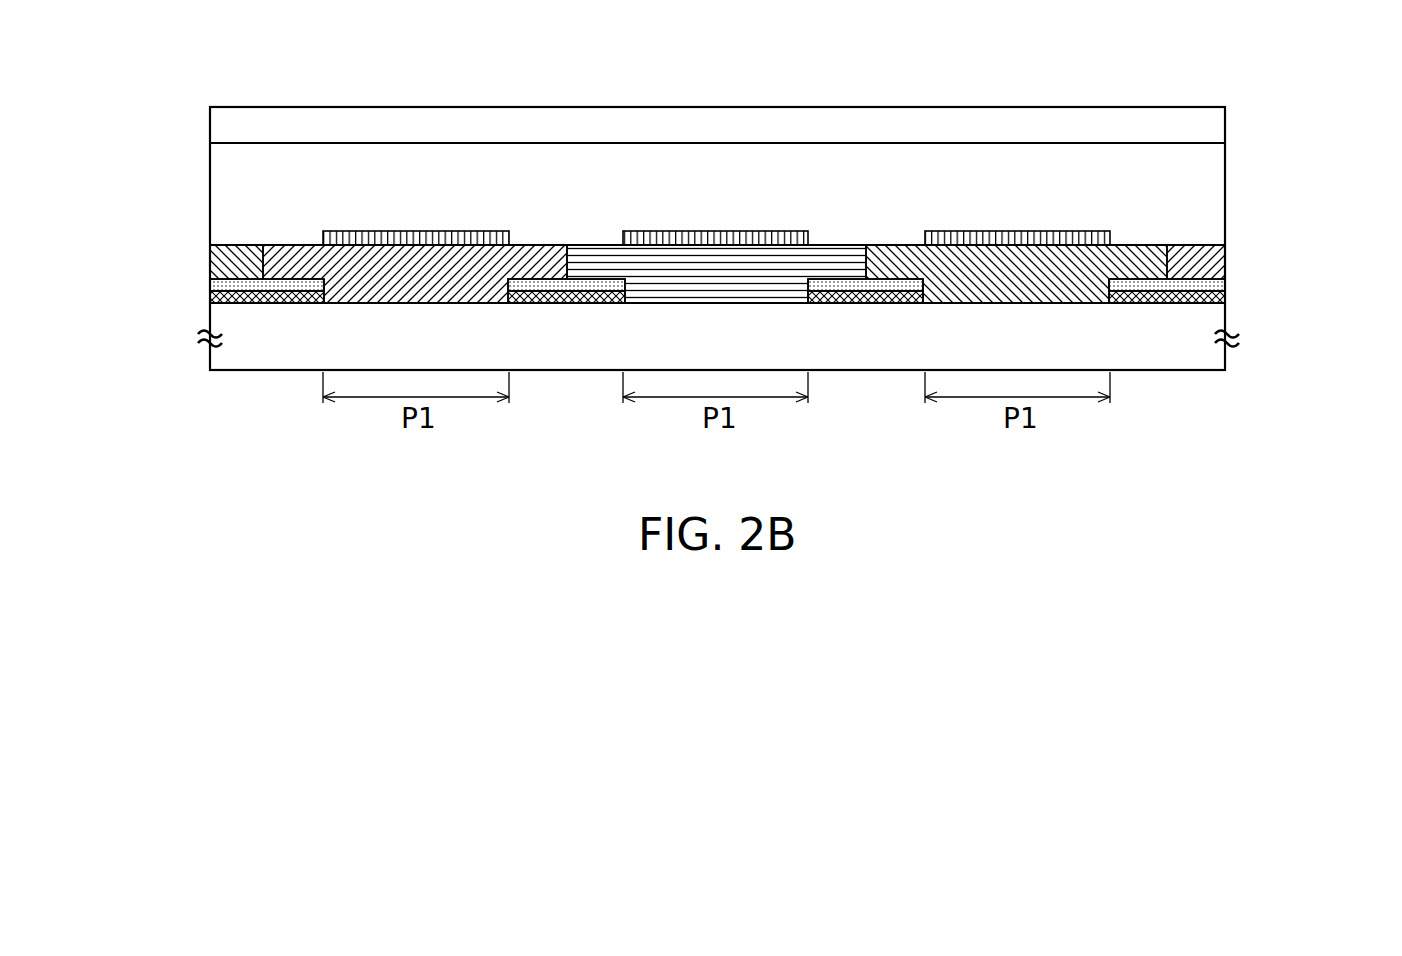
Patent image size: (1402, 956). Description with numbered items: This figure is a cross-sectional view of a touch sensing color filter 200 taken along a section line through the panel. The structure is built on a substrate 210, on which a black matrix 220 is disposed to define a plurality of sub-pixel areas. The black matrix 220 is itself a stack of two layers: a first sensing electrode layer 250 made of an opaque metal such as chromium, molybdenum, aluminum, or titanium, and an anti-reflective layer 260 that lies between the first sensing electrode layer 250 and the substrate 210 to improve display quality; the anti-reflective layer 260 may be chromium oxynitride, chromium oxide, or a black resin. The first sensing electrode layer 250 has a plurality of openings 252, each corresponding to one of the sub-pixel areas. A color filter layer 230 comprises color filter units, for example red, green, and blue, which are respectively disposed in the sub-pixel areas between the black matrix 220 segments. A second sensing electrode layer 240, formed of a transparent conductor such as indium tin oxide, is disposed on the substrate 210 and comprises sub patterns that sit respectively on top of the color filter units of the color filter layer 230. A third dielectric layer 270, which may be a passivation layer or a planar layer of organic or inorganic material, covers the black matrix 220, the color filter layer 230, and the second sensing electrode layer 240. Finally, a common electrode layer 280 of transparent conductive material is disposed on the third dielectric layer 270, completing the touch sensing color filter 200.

The touch sensing color filter 200 is at (1247, 467).
The substrate 210 is at (1215, 355).
The black matrix 220 is at (100, 253).
The color filter layer 230 is at (1225, 263).
The second sensing electrode layer 240 is at (1110, 237).
The first sensing electrode layer 250 is at (210, 284).
The opening 252 is at (410, 293).
The anti-reflective layer 260 is at (210, 295).
The third dielectric layer 270 is at (1205, 168).
The common electrode layer 280 is at (210, 125).